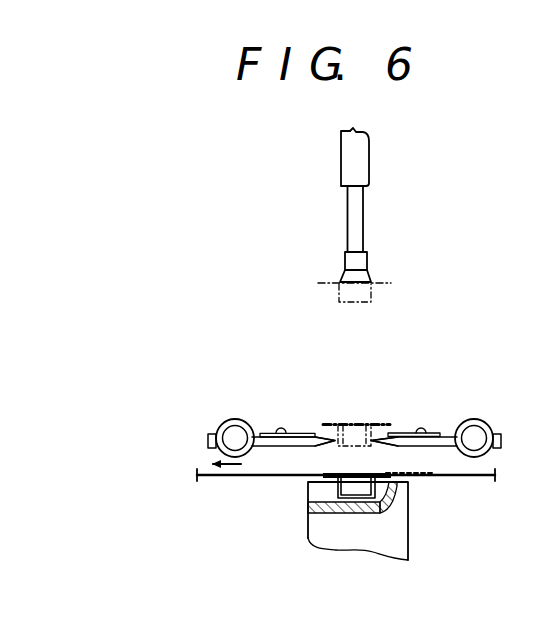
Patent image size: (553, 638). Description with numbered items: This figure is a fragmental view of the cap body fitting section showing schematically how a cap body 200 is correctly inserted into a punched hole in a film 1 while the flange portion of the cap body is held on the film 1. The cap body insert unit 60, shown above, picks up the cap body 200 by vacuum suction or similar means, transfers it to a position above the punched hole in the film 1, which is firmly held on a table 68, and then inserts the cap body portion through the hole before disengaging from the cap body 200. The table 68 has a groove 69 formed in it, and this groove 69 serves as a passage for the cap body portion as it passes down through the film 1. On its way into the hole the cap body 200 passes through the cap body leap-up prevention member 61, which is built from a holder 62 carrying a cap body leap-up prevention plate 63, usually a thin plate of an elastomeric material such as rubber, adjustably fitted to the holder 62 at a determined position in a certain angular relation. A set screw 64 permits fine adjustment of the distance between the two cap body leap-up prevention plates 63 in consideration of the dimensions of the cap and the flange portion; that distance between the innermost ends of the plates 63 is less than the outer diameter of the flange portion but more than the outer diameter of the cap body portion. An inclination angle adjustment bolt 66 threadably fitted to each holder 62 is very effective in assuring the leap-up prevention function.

The film 1 is at (479, 469).
The cap body insert unit 60 is at (364, 228).
The cap body leap-up prevention member 61 is at (425, 402).
The holder 62 is at (272, 438).
The cap body leap-up prevention plate 63 is at (304, 426).
The set screw 64 is at (271, 420).
The inclination angle adjustment bolt 66 is at (203, 427).
The table 68 is at (388, 535).
The groove 69 is at (317, 480).
The cap body 200 is at (347, 482).